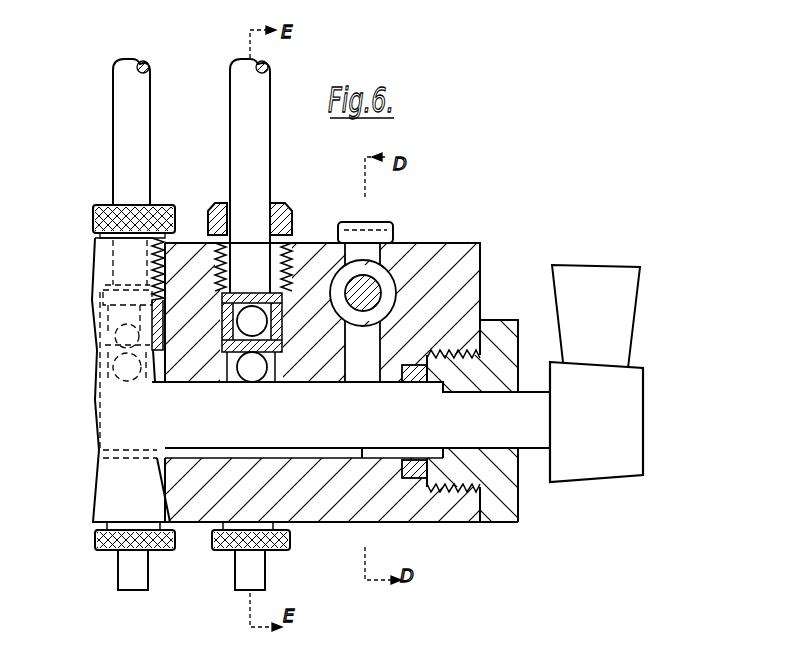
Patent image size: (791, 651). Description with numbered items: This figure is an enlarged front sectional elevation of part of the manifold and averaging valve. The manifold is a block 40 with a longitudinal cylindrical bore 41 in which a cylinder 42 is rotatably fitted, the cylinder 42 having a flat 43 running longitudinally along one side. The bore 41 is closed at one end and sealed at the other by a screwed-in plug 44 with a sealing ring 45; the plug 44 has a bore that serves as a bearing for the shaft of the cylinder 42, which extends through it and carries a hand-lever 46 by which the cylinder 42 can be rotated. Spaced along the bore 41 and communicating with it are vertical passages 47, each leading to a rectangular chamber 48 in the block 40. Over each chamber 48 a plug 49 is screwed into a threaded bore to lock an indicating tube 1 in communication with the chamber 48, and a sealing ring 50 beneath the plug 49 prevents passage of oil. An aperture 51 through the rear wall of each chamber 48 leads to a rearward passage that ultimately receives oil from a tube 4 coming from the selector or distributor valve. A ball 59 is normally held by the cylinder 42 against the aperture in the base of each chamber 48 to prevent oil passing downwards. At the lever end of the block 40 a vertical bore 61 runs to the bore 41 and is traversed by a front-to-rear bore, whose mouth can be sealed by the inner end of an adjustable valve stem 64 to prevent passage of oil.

The indicating tube 1 is at (237, 154).
The tube 4 is at (245, 574).
The block 40 is at (447, 252).
The longitudinal cylindrical bore 41 is at (333, 462).
The cylinder 42 is at (446, 328).
The flat 43 is at (362, 458).
The screwed-in plug 44 is at (520, 516).
The sealing ring 45 is at (430, 462).
The hand-lever 46 is at (583, 318).
The vertical passage 47 is at (246, 366).
The rectangular chamber 48 is at (166, 378).
The plug 49 is at (212, 212).
The sealing ring 50 is at (286, 288).
The aperture 51 is at (232, 372).
The ball 59 is at (253, 374).
The vertical bore 61 is at (410, 358).
The adjustable valve stem 64 is at (371, 287).